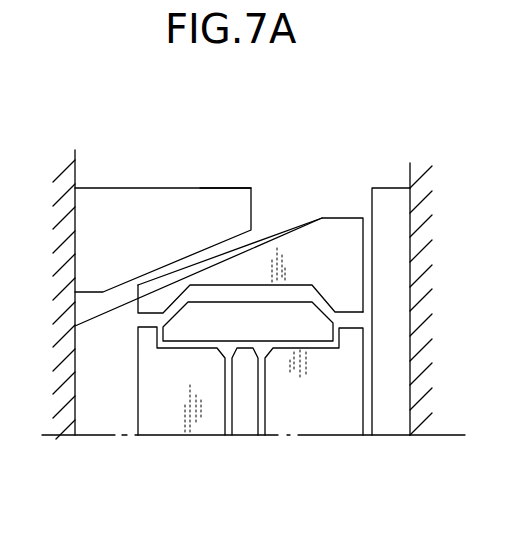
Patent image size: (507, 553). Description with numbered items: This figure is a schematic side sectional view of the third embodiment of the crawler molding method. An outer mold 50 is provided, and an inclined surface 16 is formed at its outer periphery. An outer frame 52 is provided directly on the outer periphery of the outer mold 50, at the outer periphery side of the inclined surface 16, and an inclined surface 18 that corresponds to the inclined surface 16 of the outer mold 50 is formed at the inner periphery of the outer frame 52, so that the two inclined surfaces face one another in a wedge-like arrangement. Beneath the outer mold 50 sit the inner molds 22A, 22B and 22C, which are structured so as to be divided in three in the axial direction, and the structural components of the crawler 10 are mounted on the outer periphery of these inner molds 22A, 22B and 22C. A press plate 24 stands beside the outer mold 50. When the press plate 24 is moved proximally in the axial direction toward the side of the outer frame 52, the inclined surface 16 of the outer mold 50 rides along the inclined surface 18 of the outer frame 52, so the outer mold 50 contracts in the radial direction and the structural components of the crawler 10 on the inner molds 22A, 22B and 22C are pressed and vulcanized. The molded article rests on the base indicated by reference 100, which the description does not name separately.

The inclined surface 16 is at (195, 258).
The outer frame 52 is at (220, 208).
The outer mold 50 is at (327, 233).
The inclined surface 18 is at (75, 326).
The structural components of the crawler 10 is at (312, 320).
The press plate 24 is at (397, 273).
The inner mold 22A is at (330, 437).
The inner mold 22B is at (172, 437).
The inner mold 22C is at (243, 437).
The base line 100 is at (274, 480).